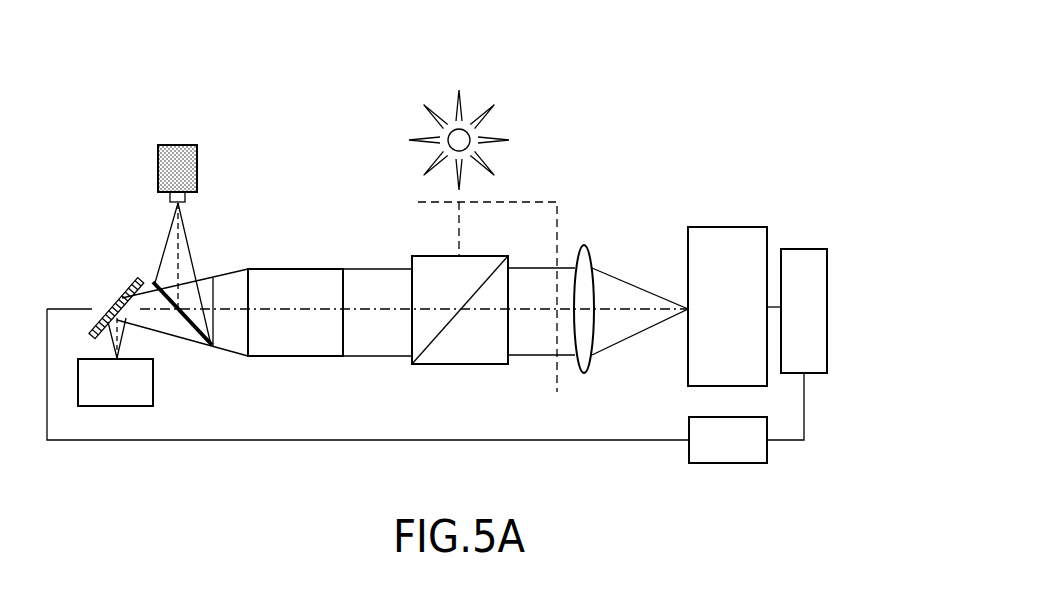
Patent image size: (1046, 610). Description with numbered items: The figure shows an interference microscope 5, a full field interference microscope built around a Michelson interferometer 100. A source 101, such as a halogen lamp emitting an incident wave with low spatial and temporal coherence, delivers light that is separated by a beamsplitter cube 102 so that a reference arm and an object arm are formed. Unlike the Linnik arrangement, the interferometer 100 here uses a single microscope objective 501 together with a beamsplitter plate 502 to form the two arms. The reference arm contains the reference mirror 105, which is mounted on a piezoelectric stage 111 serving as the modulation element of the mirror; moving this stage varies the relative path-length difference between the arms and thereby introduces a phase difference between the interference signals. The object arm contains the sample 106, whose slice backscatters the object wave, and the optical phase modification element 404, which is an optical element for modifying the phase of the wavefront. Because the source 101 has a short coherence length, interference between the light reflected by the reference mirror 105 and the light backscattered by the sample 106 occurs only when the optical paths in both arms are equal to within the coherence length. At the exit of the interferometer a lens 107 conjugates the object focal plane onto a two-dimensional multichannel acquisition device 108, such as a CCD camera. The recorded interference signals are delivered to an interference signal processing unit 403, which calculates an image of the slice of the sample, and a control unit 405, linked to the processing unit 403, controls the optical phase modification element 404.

The interference microscope 5 is at (224, 65).
The interferometer 100 is at (535, 200).
The source 101 is at (510, 122).
The beamsplitter cube 102 is at (478, 254).
The reference mirror 105 is at (190, 198).
The sample 106 is at (153, 383).
The lens 107 is at (582, 241).
The two-dimensional multichannel acquisition device 108 is at (705, 227).
The piezoelectric stage 111 is at (197, 173).
The interference signal processing unit 403 is at (800, 249).
The optical phase modification element 404 is at (100, 288).
The control unit 405 is at (725, 464).
The microscope objective 501 is at (290, 265).
The reflecting mirror 502 is at (187, 328).